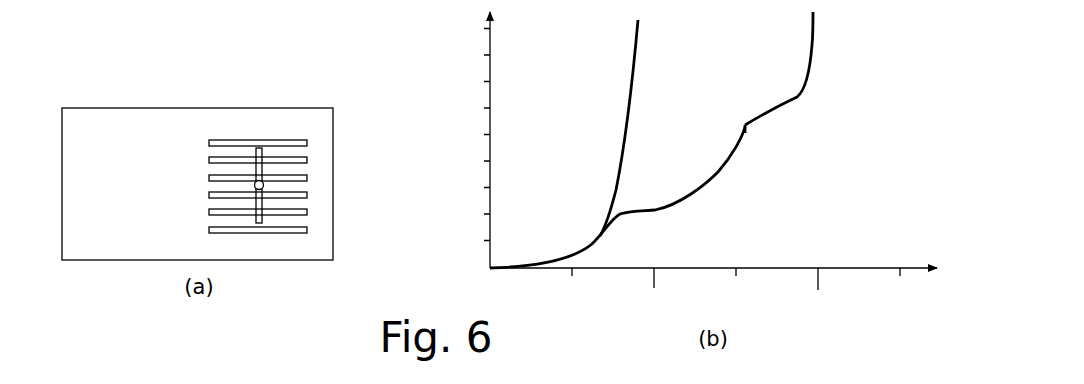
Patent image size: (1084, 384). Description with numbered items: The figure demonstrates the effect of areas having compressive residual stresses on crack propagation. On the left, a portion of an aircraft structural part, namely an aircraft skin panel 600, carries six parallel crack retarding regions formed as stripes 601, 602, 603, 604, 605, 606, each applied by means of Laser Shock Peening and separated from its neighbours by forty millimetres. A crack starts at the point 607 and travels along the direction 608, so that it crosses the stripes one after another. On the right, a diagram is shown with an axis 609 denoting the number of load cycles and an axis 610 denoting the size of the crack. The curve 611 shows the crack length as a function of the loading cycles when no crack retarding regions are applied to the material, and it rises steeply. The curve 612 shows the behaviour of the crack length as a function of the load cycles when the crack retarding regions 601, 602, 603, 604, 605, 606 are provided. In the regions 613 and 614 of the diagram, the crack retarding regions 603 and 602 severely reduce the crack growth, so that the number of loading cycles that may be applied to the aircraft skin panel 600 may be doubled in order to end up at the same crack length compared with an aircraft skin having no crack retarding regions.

The aircraft skin panel 600 is at (89, 106).
The first crack retarding stripe 601 is at (307, 143).
The second crack retarding stripe 602 is at (307, 160).
The third crack retarding stripe 603 is at (307, 178).
The fourth crack retarding stripe 604 is at (307, 195).
The fifth crack retarding stripe 605 is at (307, 212).
The sixth crack retarding stripe 606 is at (307, 230).
The crack starting point 607 is at (255, 184).
The crack propagation direction 608 is at (276, 148).
The load cycle axis 609 is at (790, 268).
The crack size axis 610 is at (490, 70).
The crack length curve without crack retarding regions 611 is at (625, 122).
The crack length curve with crack retarding regions 612 is at (797, 98).
The crack growth reduction region 613 is at (717, 173).
The crack growth reduction region 614 is at (767, 103).